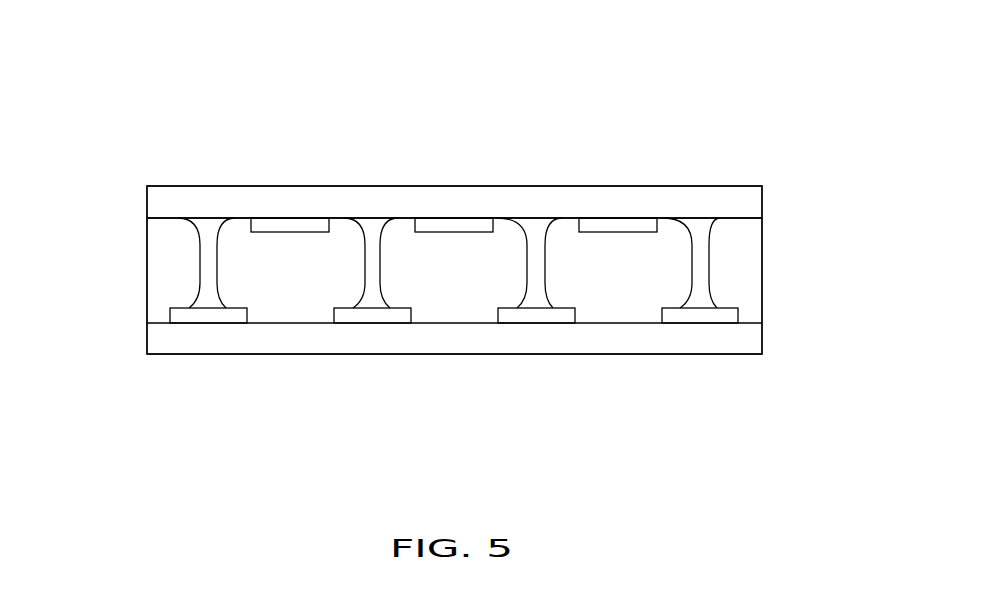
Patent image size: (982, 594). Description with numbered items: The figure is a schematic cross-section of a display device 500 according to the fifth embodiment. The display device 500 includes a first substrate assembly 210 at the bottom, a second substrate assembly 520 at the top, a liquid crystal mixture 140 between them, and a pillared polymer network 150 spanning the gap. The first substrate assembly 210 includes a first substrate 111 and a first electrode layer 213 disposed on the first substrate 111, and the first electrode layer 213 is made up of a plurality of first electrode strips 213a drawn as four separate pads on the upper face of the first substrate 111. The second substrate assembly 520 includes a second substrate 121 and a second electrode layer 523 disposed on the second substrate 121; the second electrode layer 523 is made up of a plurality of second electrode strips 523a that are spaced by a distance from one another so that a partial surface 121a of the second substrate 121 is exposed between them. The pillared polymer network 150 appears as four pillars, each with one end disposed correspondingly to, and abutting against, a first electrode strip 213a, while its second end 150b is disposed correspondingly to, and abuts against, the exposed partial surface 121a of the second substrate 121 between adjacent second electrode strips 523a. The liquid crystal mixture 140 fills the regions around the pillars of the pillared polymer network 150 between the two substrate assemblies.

The display device 500 is at (90, 42).
The second substrate assembly 520 is at (433, 72).
The second electrode layer 523 is at (243, 131).
The second electrode strips 523a is at (292, 227).
The second substrate 121 is at (757, 186).
The partial surface 121a is at (707, 198).
The liquid crystal mixture 140 is at (752, 268).
The pillared polymer network 150 is at (702, 277).
The second end 150b is at (736, 230).
The first substrate assembly 210 is at (428, 470).
The first substrate 111 is at (743, 340).
The first electrode layer 213 is at (180, 412).
The first electrode strips 213a is at (207, 315).